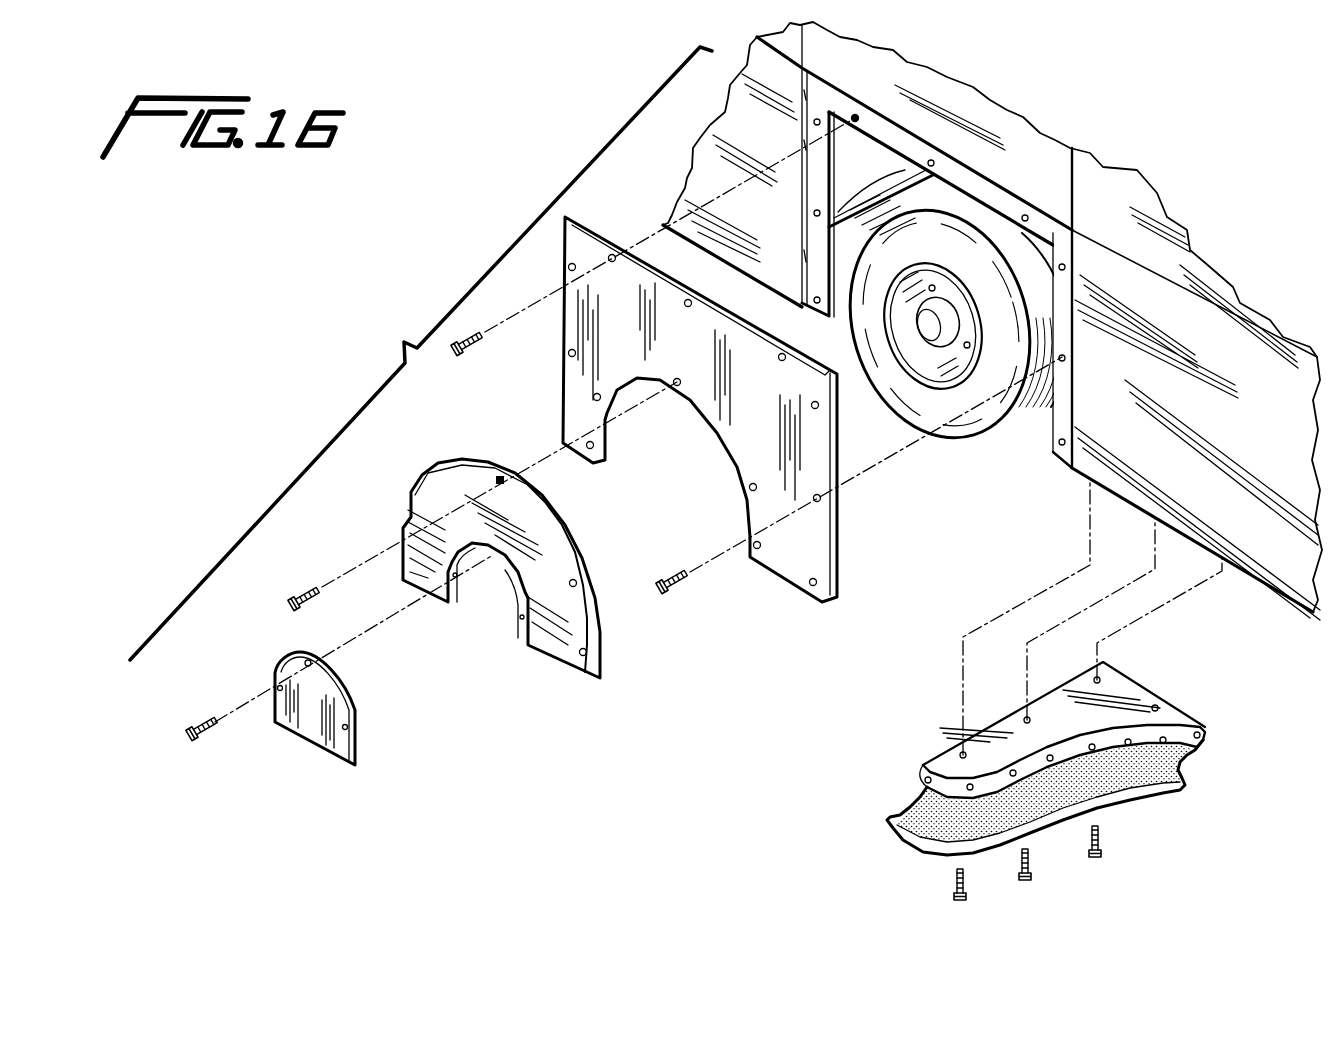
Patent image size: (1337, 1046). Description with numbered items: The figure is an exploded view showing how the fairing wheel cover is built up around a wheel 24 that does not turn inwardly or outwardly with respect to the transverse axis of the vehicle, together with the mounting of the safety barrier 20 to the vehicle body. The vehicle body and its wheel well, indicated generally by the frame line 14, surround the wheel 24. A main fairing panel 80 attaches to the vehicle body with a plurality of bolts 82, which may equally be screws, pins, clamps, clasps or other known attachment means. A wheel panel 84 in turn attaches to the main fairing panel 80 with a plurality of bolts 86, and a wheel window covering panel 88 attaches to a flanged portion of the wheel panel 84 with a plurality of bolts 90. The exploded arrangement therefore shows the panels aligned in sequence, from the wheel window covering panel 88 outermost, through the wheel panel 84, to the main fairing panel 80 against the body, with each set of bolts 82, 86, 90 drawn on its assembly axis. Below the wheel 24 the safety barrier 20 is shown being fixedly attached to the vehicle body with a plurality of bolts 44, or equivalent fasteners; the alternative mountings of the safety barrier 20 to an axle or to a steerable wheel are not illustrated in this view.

The vehicle frame 14 is at (421, 353).
The safety barrier 20 is at (1187, 767).
The wheel 24 is at (980, 428).
The bolts 44 is at (950, 880).
The main fairing panel 80 is at (803, 577).
The bolts 82 is at (467, 353).
The wheel panel 84 is at (568, 667).
The bolts 86 is at (320, 587).
The wheel window covering panel 88 is at (333, 750).
The bolts 90 is at (200, 720).